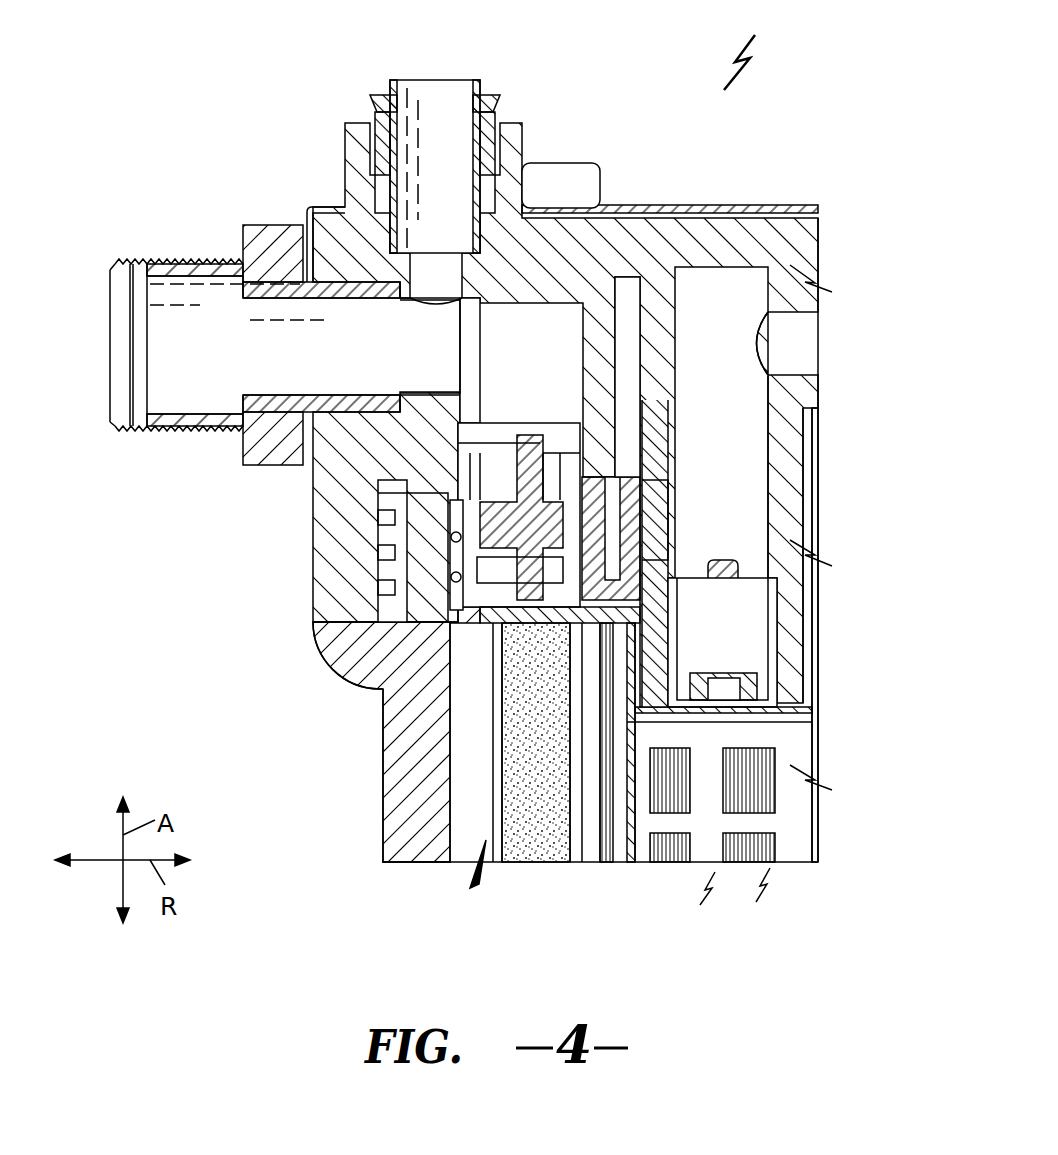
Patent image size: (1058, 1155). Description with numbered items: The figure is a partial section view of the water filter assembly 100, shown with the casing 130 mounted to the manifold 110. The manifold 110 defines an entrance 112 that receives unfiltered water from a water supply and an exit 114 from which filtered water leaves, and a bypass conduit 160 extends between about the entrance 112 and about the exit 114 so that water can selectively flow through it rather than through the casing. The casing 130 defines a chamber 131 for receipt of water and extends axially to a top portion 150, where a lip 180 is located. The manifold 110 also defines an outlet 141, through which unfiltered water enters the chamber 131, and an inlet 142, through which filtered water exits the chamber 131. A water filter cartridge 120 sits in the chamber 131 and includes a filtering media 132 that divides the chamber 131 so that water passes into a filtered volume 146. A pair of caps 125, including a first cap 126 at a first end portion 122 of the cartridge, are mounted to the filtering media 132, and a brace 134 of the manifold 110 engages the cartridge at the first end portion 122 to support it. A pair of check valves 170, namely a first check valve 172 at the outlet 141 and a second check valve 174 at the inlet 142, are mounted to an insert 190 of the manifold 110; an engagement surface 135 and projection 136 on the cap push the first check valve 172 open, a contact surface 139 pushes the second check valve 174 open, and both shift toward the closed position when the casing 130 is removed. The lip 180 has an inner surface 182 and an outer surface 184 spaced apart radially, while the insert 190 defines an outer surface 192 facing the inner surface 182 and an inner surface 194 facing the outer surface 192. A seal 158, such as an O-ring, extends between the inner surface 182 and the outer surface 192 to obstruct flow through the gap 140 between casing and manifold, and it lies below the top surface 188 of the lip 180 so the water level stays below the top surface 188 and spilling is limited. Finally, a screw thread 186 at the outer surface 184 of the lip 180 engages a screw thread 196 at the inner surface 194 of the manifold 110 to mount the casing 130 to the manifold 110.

The water filter assembly 100 is at (759, 45).
The manifold 110 is at (795, 240).
The entrance 112 is at (178, 348).
The exit 114 is at (782, 344).
The water filter cartridge 120 is at (600, 845).
The first end portion 122 is at (830, 606).
The caps 125 is at (500, 660).
The first cap 126 is at (638, 522).
The casing 130 is at (413, 845).
The chamber 131 is at (458, 850).
The filtering media 132 is at (540, 845).
The brace 134 is at (790, 615).
The engagement surface 135 is at (500, 698).
The projection 136 is at (500, 740).
The contact surface 139 is at (745, 675).
The gap 140 is at (378, 688).
The outlet 141 is at (495, 622).
The inlet 142 is at (767, 722).
The filtered volume 146 is at (793, 835).
The top portion 150 is at (822, 482).
The seal 158 is at (378, 582).
The bypass conduit 160 is at (440, 108).
The check valves 170 is at (560, 470).
The first check valve 172 is at (543, 460).
The second check valve 174 is at (720, 558).
The lip 180 is at (382, 603).
The inner surface 182 is at (515, 445).
The outer surface 184 is at (382, 503).
The screw thread 186 is at (378, 635).
The top surface 188 is at (463, 497).
The insert 190 is at (483, 440).
The outer surface 192 is at (365, 656).
The inner surface 194 is at (410, 470).
The screw thread 196 is at (302, 415).